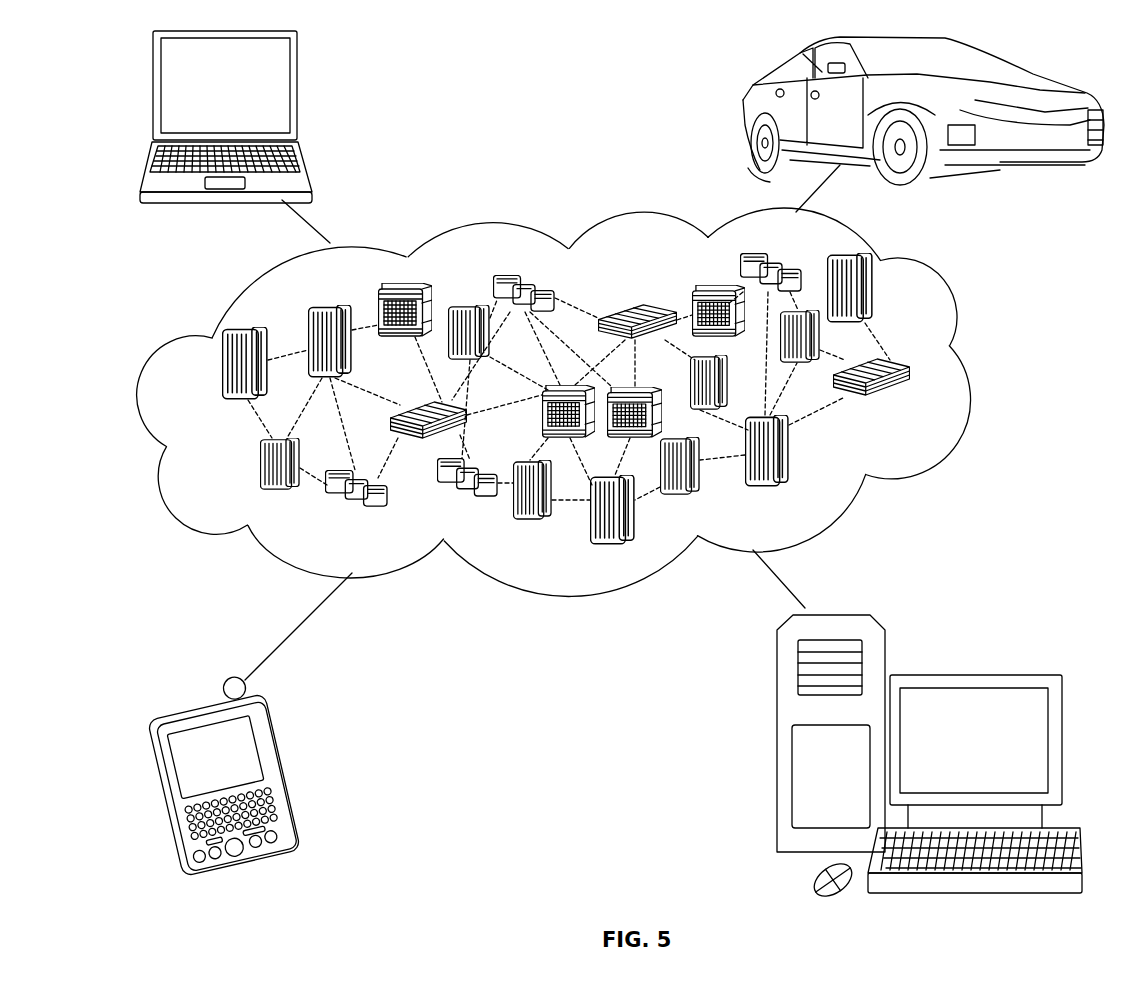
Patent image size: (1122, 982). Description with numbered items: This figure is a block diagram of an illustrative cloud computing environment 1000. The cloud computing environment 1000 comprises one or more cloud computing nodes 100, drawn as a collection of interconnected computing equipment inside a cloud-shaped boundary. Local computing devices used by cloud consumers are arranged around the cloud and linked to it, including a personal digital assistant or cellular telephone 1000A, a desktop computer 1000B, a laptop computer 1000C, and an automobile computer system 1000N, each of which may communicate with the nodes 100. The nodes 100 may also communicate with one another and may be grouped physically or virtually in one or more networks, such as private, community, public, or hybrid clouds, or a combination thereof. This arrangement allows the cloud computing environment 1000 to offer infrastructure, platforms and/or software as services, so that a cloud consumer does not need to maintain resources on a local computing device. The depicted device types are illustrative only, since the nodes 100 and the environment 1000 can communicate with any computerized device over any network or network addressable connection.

The laptop computer 1000C is at (300, 92).
The automobile computer system 1000N is at (748, 112).
The cloud computing environment 1000 is at (975, 380).
The cloud computing nodes 100 is at (912, 407).
The personal digital assistant (PDA) or cellular telephone 1000A is at (285, 775).
The desktop computer 1000B is at (972, 675).